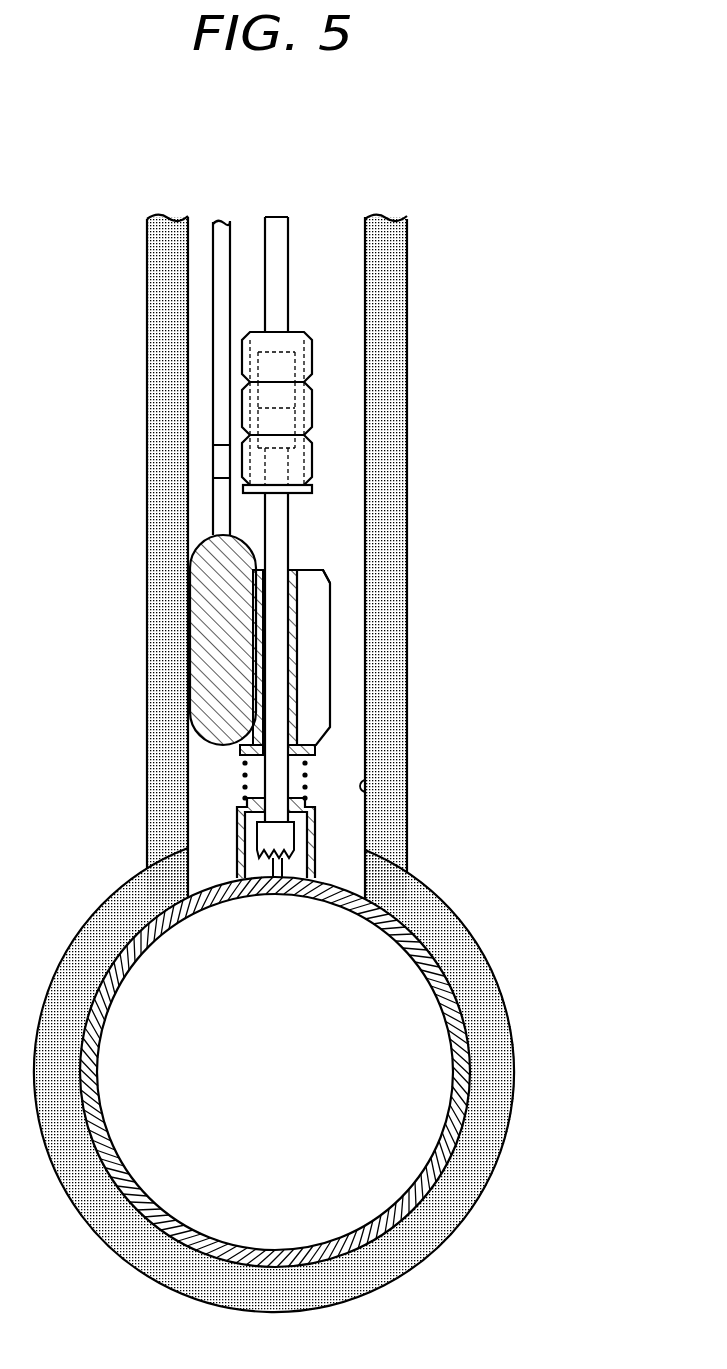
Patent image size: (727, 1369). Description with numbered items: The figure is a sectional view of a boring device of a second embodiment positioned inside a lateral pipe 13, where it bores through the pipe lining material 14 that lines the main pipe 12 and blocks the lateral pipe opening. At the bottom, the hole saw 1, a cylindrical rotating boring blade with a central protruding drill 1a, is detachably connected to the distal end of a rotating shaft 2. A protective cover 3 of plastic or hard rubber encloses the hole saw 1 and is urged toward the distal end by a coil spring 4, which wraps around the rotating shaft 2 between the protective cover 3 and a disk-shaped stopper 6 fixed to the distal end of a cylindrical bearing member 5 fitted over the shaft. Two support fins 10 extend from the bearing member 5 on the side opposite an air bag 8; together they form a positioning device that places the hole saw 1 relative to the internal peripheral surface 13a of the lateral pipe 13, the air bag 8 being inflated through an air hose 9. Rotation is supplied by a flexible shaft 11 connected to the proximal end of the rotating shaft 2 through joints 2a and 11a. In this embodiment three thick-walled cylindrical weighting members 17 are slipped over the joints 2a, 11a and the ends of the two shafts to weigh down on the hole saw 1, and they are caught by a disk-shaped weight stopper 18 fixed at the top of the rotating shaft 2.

The hole saw 1 is at (278, 830).
The drill 1a is at (282, 858).
The rotating shaft 2 is at (273, 654).
The joint 2a is at (253, 425).
The protective cover 3 is at (237, 825).
The spring 4 is at (243, 773).
The bearing member 5 is at (313, 605).
The stopper 6 is at (315, 753).
The air bag 8 is at (207, 683).
The air hose 9 is at (225, 283).
The support fins 10 is at (332, 600).
The flexible shaft 11 is at (278, 298).
The joint 11a is at (250, 368).
The main pipe 12 is at (502, 1030).
The lateral pipe 13 is at (407, 697).
The internal peripheral surface 13a is at (361, 787).
The pipe lining material 14 is at (421, 976).
The weighting members 17 is at (312, 397).
The weight stopper 18 is at (312, 487).